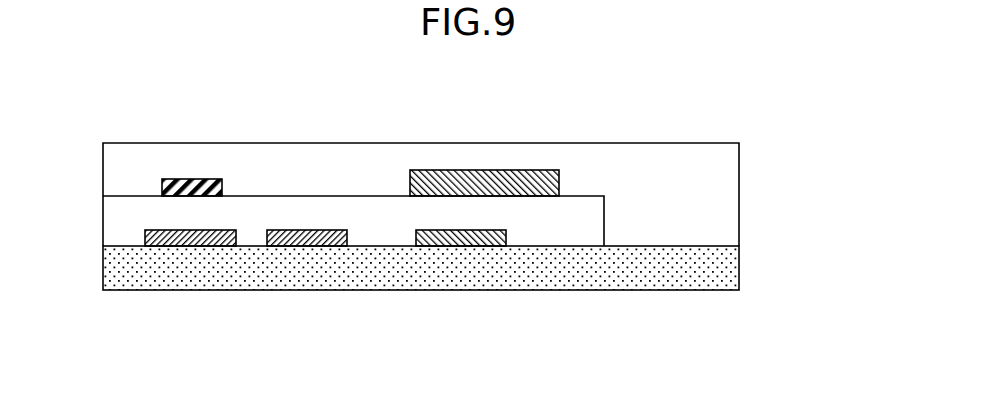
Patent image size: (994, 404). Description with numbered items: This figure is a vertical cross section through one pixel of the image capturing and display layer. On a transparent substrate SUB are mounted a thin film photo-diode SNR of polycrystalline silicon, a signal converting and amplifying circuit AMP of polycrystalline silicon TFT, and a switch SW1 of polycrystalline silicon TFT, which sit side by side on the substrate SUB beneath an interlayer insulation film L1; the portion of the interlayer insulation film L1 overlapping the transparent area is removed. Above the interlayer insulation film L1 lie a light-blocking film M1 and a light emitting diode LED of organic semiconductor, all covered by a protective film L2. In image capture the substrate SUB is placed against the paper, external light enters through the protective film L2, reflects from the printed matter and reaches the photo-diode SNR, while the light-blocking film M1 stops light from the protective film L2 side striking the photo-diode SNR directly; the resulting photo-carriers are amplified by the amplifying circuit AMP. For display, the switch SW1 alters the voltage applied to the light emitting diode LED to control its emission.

The transparent substrate SUB is at (673, 292).
The protective film L2 is at (739, 165).
The interlayer insulation film L1 is at (604, 218).
The light-blocking film M1 is at (178, 179).
The light emitting diode LED is at (467, 165).
The thin film photo-diode SNR is at (188, 246).
The signal converting and amplifying circuit AMP is at (305, 246).
The switch SW1 is at (473, 246).